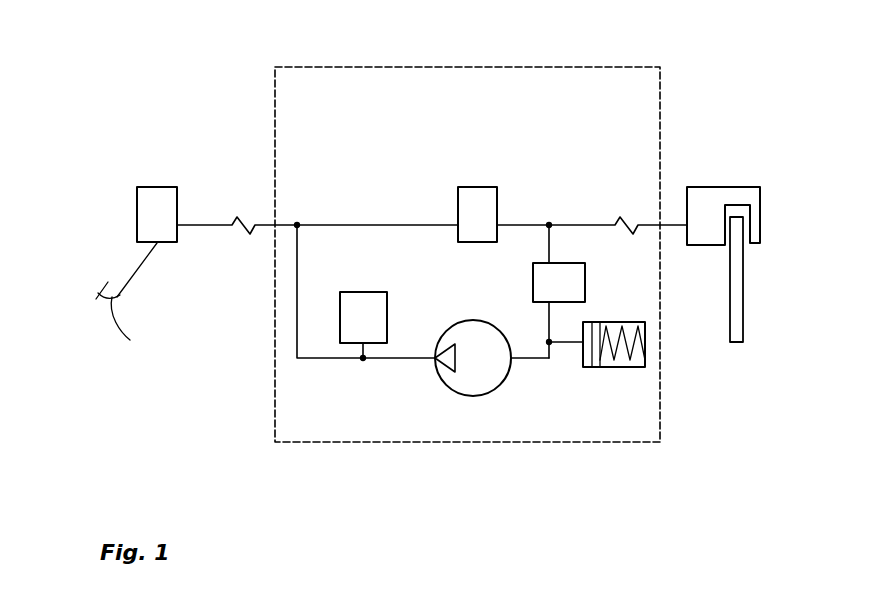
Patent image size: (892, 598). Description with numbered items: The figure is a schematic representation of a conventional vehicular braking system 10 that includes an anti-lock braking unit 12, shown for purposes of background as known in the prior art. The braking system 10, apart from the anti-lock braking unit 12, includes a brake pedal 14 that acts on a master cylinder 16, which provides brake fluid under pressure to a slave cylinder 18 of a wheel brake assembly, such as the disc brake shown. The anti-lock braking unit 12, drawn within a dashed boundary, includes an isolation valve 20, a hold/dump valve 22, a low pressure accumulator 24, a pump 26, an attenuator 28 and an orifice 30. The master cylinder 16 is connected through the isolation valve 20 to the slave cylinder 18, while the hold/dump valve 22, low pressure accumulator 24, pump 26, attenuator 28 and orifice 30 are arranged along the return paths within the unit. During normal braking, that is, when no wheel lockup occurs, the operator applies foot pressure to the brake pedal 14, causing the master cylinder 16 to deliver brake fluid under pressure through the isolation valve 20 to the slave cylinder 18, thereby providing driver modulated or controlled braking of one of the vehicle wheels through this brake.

The braking system 10 is at (693, 84).
The anti-lock braking unit 12 is at (407, 368).
The brake pedal 14 is at (132, 305).
The master cylinder 16 is at (145, 195).
The slave cylinder 18 is at (743, 195).
The isolation valve 20 is at (488, 200).
The hold/dump valve 22 is at (568, 278).
The low pressure accumulator 24 is at (643, 358).
The pump 26 is at (490, 380).
The attenuator 28 is at (377, 303).
The orifice 30 is at (313, 358).